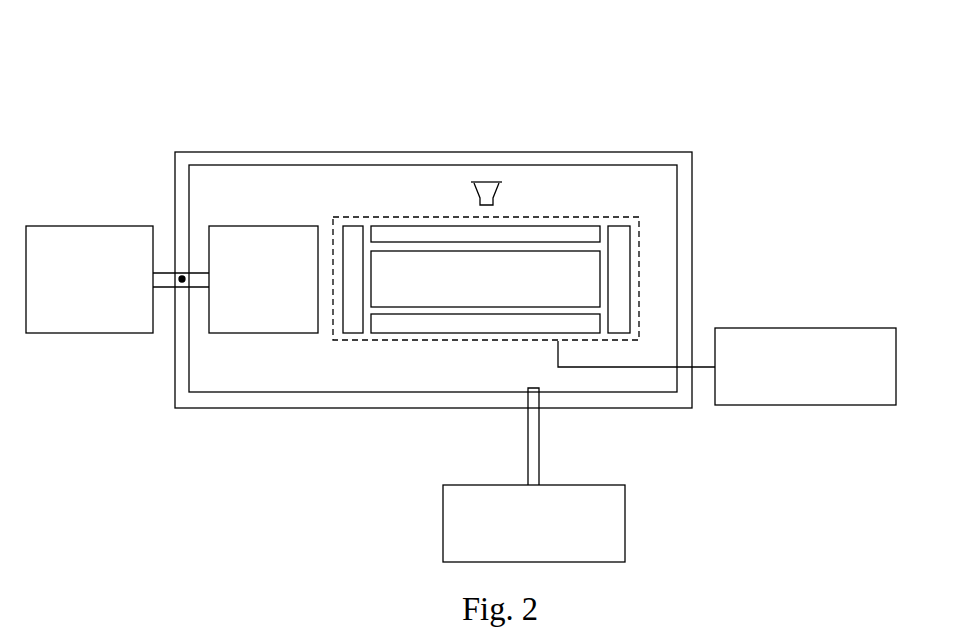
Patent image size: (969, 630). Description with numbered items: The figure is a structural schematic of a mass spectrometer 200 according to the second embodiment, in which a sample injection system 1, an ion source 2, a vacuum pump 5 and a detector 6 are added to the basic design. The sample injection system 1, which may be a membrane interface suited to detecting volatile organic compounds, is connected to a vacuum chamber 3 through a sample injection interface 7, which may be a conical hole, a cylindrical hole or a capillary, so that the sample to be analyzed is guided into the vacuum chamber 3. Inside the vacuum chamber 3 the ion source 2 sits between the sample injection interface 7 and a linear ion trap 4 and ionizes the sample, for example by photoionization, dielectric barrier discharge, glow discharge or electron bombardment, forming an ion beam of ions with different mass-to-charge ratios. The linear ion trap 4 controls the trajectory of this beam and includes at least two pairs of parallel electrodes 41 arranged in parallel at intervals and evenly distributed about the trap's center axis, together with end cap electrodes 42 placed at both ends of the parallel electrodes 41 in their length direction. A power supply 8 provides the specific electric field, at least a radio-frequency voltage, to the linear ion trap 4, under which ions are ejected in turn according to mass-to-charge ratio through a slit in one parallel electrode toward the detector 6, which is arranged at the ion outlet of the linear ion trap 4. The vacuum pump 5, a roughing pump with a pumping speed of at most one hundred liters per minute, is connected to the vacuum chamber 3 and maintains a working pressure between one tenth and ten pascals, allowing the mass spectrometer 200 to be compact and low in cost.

The mass spectrometer 200 is at (628, 130).
The vacuum chamber 3 is at (245, 188).
The sample injection system 1 is at (82, 312).
The ion source 2 is at (255, 311).
The sample injection interface 7 is at (178, 293).
The detector 6 is at (443, 148).
The linear ion trap 4 is at (278, 457).
The parallel electrodes 41 is at (350, 338).
The end cap electrode 42 is at (412, 338).
The power supply 8 is at (799, 397).
The vacuum pump 5 is at (527, 556).